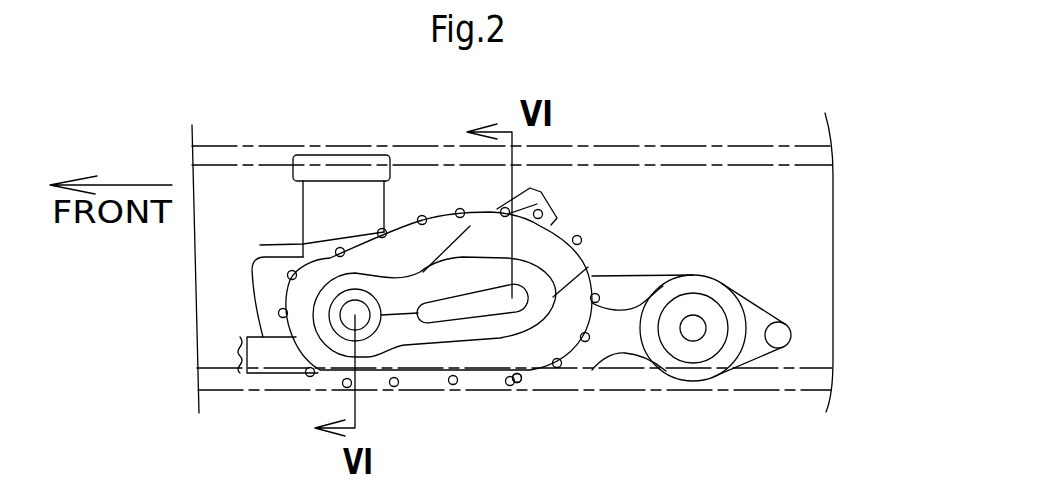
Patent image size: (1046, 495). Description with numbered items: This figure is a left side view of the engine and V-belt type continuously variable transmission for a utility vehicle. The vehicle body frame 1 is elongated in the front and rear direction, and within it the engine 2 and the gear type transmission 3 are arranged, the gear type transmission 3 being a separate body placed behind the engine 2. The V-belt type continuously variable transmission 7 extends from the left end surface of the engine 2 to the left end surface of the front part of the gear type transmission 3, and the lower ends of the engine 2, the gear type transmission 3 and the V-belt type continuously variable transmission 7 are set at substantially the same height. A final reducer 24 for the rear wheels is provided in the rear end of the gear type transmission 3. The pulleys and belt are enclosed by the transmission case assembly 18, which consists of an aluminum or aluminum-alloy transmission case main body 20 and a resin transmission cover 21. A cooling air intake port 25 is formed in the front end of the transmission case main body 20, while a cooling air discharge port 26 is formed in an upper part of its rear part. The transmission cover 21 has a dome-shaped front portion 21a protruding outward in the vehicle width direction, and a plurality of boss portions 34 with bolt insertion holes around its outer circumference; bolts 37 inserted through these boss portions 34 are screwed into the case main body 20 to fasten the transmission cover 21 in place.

The vehicle body frame 1 is at (661, 164).
The engine 2 is at (298, 244).
The gear type transmission 3 is at (691, 332).
The V-belt type continuously variable transmission 7 is at (199, 299).
The transmission case assembly 18 is at (199, 299).
The transmission case main body 20 is at (262, 314).
The transmission cover 21 is at (449, 332).
The front portion of the transmission cover 21a is at (375, 340).
The final reducer 24 is at (720, 357).
The cooling air intake port 25 is at (273, 355).
The cooling air discharge port 26 is at (555, 223).
The boss portions 34 is at (523, 333).
The bolts 37 is at (508, 381).